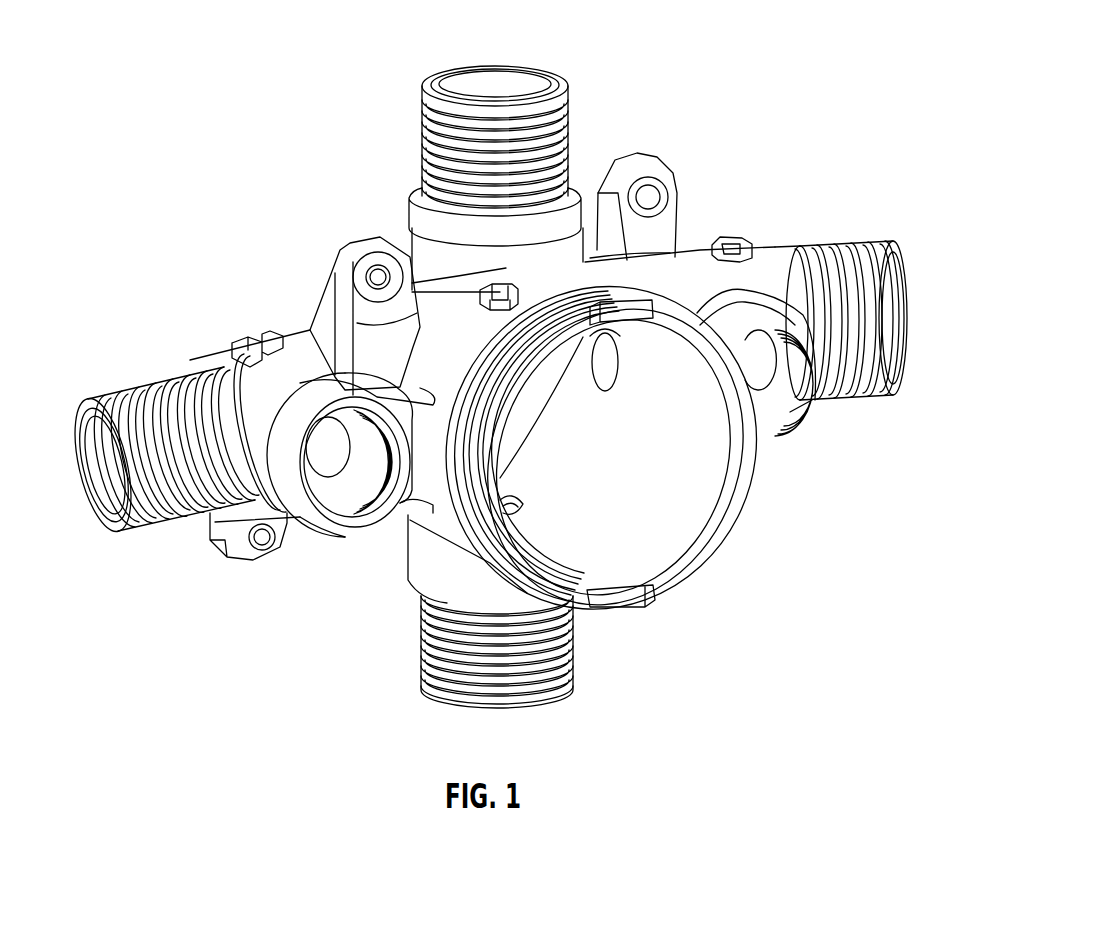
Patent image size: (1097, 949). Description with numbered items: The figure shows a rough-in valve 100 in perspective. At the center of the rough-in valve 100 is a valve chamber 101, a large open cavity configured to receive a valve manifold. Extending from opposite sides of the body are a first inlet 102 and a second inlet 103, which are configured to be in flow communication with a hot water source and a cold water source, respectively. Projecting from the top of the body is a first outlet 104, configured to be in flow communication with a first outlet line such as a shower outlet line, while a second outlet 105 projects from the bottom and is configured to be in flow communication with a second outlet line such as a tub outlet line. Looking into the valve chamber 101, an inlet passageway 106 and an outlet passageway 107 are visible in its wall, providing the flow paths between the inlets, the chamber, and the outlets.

The rough-in valve 100 is at (715, 50).
The valve chamber 101 is at (616, 477).
The first inlet 102 is at (115, 527).
The second inlet 103 is at (887, 252).
The first outlet 104 is at (528, 82).
The second outlet 105 is at (543, 700).
The inlet passageway 106 is at (612, 381).
The outlet passageway 107 is at (505, 517).